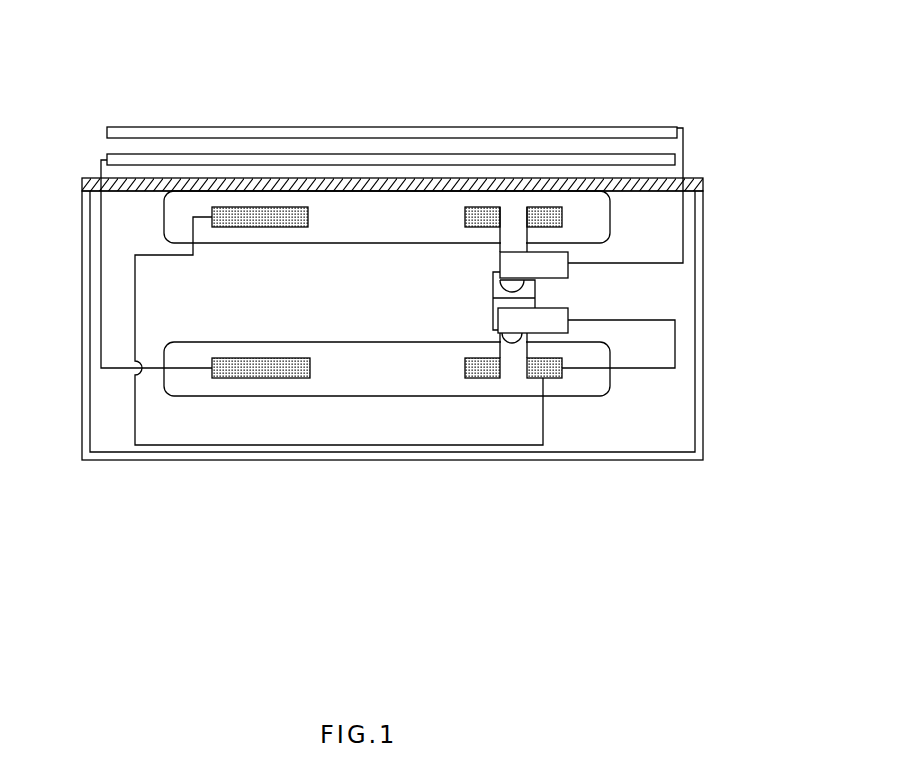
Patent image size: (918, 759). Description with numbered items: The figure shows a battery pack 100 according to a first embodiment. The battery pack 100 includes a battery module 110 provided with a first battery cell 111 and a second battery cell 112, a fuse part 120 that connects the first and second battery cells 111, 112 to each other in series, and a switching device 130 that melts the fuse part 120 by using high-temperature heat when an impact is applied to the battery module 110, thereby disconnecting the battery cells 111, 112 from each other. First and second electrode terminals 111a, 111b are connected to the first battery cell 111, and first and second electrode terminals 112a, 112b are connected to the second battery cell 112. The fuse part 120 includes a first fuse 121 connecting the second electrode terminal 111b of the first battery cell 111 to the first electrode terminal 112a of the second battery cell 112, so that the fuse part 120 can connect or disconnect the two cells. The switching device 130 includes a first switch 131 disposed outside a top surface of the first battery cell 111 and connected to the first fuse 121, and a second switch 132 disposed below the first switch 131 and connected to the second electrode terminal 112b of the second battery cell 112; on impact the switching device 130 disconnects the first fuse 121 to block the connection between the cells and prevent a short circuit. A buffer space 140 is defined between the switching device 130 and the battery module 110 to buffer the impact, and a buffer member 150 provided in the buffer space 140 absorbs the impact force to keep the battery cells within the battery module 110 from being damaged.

The battery pack 100 is at (611, 78).
The battery module 110 is at (697, 425).
The first battery cell 111 is at (311, 318).
The first electrode terminal 111a is at (258, 228).
The second electrode terminal 111b is at (475, 228).
The second battery cell 112 is at (343, 370).
The first electrode terminal 112a is at (487, 379).
The second electrode terminal 112b is at (290, 358).
The fuse part 120 is at (484, 407).
The first fuse 121 is at (493, 302).
The switching device 130 is at (392, 194).
The first switch 131 is at (200, 127).
The second switch 132 is at (261, 154).
The buffer space 140 is at (670, 172).
The buffer member 150 is at (703, 184).